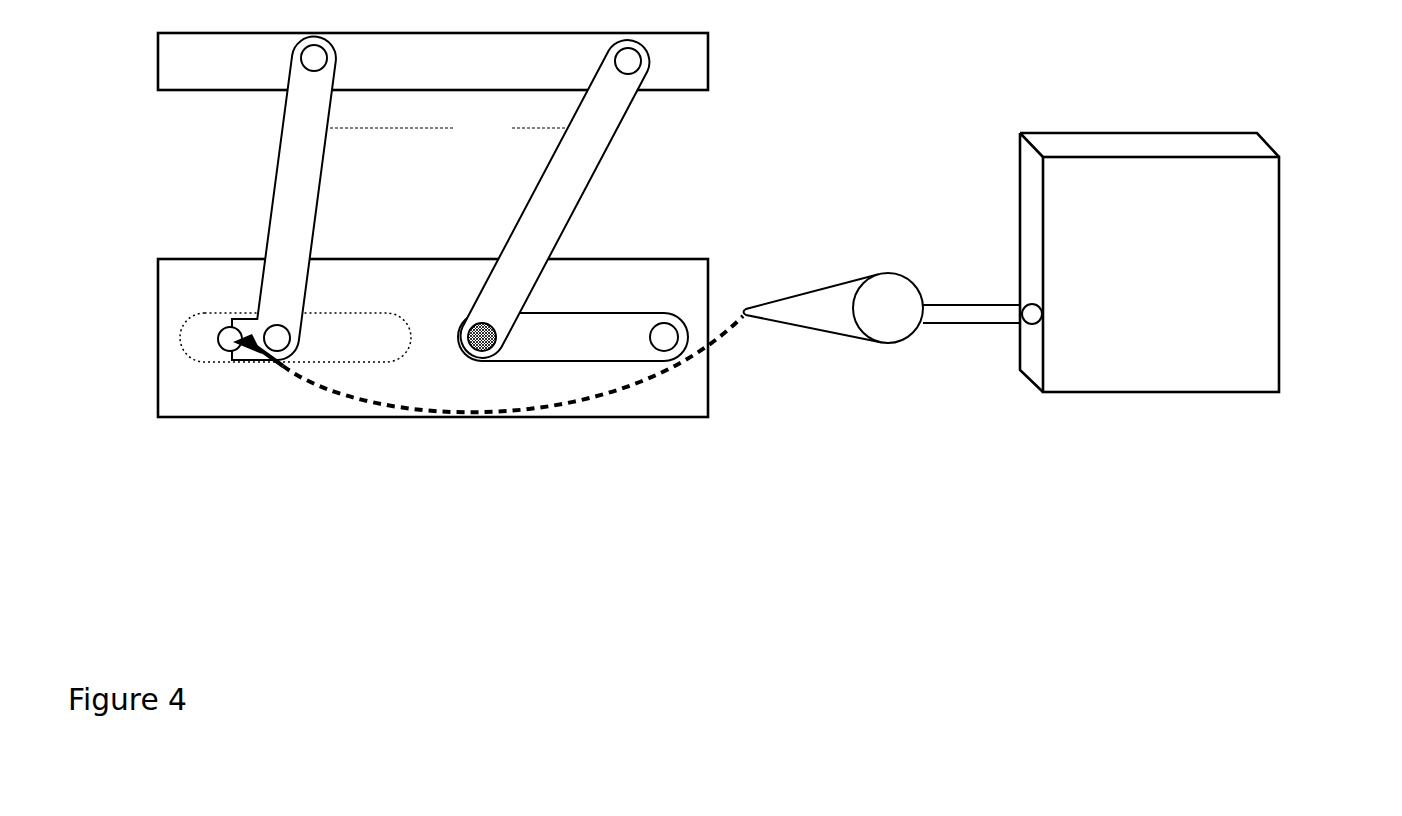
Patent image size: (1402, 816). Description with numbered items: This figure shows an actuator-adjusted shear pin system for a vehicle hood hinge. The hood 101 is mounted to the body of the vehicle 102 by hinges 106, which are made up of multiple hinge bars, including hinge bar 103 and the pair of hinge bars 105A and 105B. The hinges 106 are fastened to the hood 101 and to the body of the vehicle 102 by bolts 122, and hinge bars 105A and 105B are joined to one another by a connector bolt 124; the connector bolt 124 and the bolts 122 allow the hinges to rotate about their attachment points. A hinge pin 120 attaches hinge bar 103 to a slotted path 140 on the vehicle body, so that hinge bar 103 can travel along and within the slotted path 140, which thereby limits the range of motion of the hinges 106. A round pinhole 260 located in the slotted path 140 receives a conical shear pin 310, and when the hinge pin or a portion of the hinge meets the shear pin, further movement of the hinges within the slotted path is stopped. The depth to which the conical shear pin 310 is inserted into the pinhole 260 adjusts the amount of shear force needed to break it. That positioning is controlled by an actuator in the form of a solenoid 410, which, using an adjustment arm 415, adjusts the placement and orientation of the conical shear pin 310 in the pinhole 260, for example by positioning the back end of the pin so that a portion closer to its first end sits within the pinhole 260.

The hood 101 is at (708, 53).
The body of the vehicle 102 is at (388, 418).
The hinge bar 103 is at (326, 195).
The hinge bar 105A is at (588, 187).
The hinge bar 105B is at (603, 361).
The hinges 106 is at (447, 130).
The hinge pin 120 is at (277, 352).
The bolts 122 is at (330, 65).
The connector bolt 124 is at (482, 351).
The slotted path 140 is at (345, 312).
The round pinhole 260 is at (230, 347).
The conical shear pin 310 is at (847, 340).
The solenoid 410 is at (1282, 223).
The adjustment arm 415 is at (950, 303).